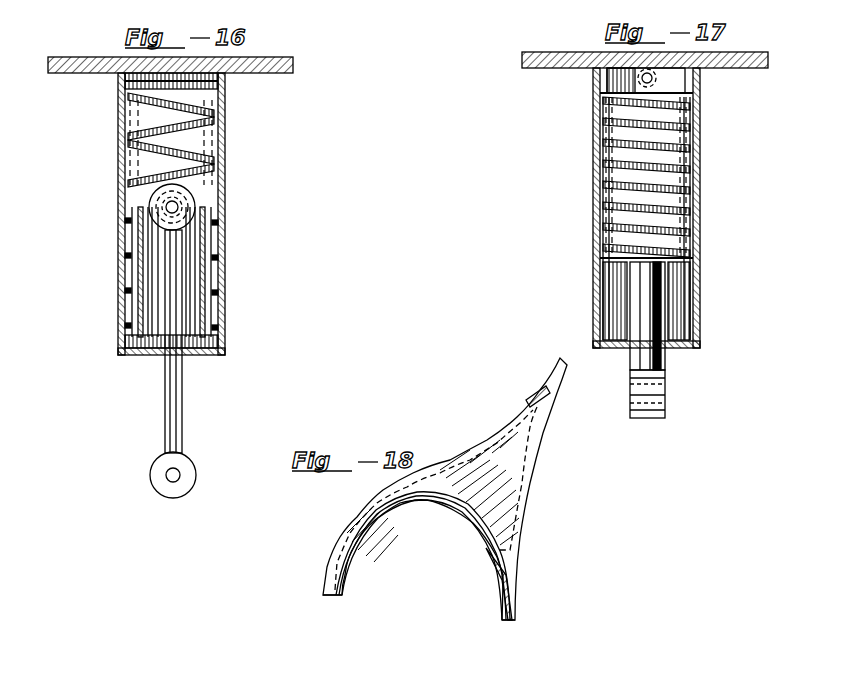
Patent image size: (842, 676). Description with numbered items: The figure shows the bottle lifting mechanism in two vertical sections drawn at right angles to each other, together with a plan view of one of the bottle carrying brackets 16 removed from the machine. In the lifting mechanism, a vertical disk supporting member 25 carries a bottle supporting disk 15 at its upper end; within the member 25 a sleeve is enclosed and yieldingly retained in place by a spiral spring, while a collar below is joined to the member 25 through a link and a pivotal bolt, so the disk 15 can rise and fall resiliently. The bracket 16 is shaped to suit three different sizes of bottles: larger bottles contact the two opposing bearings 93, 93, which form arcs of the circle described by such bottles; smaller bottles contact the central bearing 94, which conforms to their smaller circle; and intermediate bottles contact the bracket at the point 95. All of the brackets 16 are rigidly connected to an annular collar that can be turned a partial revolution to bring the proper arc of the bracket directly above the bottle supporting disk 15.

In FIG. 16, the bottle supporting disk 15 is at (268, 75).
In FIG. 17, the bottle supporting disk 15 is at (557, 68).
In FIG. 16, the disk supporting member 25 is at (222, 185).
In FIG. 17, the disk supporting member 25 is at (594, 235).
In FIG. 18, the bottle carrying bracket 16 is at (497, 498).
In FIG. 18, the opposing bearing 93 is at (345, 583).
In FIG. 18, the central bearing 94 is at (425, 513).
In FIG. 18, the contact point 95 is at (372, 547).